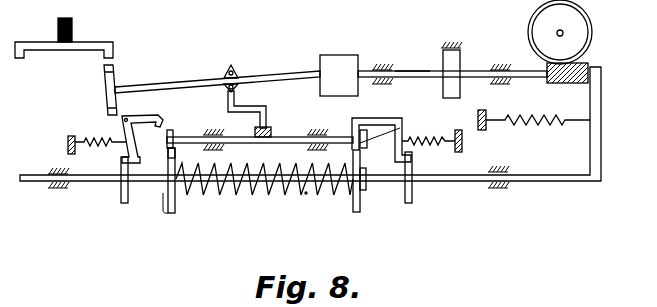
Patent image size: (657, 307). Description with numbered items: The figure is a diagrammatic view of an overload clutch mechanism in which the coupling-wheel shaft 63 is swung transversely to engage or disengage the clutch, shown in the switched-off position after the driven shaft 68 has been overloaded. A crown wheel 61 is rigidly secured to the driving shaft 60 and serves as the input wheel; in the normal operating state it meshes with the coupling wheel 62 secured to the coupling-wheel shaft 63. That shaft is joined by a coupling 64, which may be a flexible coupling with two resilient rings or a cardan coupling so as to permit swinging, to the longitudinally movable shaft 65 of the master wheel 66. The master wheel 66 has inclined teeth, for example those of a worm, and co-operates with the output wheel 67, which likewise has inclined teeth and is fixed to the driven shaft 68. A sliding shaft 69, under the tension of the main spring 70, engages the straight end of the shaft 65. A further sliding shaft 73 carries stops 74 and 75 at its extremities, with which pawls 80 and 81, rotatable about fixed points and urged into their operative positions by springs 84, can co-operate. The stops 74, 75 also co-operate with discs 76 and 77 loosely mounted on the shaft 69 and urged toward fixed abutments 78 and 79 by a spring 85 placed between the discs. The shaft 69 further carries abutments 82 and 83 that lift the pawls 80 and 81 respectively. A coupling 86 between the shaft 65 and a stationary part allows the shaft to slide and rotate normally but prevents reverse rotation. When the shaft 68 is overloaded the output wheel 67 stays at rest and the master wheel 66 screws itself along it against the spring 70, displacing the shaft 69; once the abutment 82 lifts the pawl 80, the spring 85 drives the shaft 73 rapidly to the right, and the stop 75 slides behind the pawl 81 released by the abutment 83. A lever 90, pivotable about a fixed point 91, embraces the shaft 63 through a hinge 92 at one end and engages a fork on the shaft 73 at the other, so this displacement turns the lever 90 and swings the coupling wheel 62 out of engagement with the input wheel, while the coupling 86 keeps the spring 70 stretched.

The driving shaft 60 is at (58, 25).
The crown wheel 61 is at (90, 42).
The coupling wheel 62 is at (104, 100).
The coupling-wheel shaft 63 is at (176, 80).
The coupling 64 is at (340, 60).
The shaft of the master wheel 65 is at (404, 71).
The master wheel 66 is at (578, 84).
The output wheel 67 is at (531, 14).
The driven shaft 68 is at (557, 35).
The sliding shaft 69 is at (477, 182).
The main spring 70 is at (545, 125).
The sliding shaft 73 is at (337, 137).
The stop 74 is at (169, 149).
The stop 75 is at (402, 141).
The disc 76 is at (176, 211).
The disc 77 is at (356, 212).
The fixed abutment 78 is at (172, 200).
The fixed abutment 79 is at (363, 190).
The pawl 80 is at (150, 114).
The pawl 81 is at (380, 119).
The abutment 82 is at (123, 203).
The abutment 83 is at (408, 203).
The springs 84 is at (88, 140).
The spring 85 is at (306, 195).
The coupling 86 is at (455, 62).
The lever 90 is at (270, 123).
The fixed point 91 is at (266, 105).
The hinge 92 is at (231, 63).